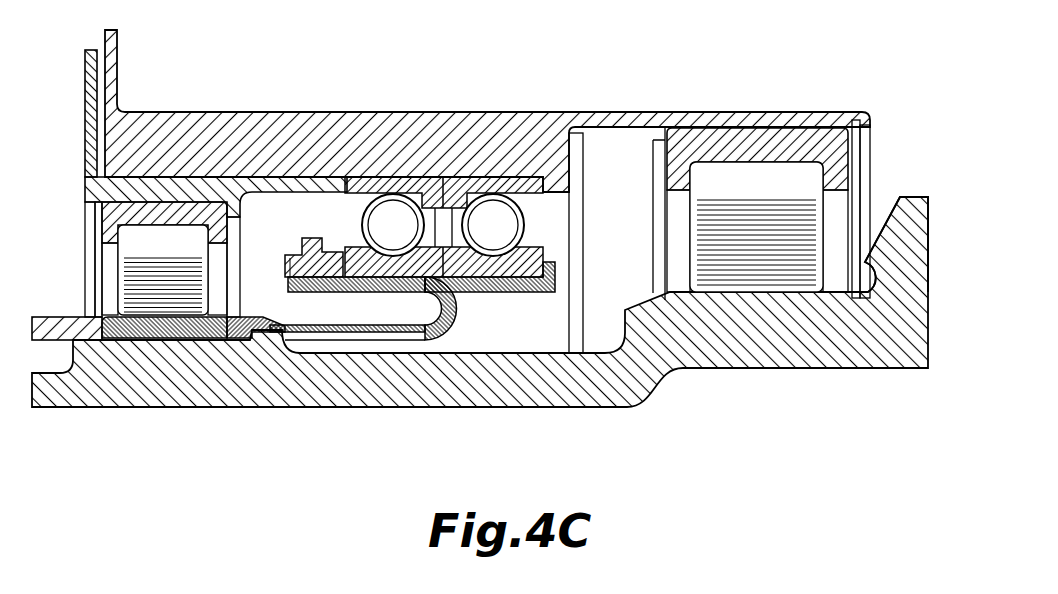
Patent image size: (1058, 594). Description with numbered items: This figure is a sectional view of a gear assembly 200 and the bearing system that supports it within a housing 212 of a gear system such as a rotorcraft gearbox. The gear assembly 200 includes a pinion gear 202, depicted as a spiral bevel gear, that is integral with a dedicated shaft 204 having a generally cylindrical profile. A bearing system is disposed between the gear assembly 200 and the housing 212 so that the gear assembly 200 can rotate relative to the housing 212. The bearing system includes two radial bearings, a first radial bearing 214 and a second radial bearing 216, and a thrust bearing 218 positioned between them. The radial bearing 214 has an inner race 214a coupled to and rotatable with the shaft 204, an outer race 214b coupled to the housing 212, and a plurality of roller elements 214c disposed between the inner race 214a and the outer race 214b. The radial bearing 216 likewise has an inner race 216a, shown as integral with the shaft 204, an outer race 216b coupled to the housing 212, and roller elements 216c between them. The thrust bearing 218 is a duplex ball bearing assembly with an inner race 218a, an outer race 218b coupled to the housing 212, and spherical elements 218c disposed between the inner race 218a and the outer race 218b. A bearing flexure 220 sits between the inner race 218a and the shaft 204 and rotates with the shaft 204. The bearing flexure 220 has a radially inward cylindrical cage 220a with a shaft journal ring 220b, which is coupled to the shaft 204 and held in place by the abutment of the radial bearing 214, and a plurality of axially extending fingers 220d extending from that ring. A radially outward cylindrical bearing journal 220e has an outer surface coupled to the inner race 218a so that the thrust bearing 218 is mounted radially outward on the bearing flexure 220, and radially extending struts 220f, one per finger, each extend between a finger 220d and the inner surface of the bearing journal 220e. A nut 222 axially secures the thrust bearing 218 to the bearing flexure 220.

The gear assembly 200 is at (721, 368).
The pinion gear 202 is at (918, 207).
The shaft 204 is at (178, 392).
The housing 212 is at (362, 127).
The radial bearing 214 is at (183, 196).
The inner race 214a is at (128, 330).
The outer race 214b is at (208, 212).
The roller elements 214c is at (162, 238).
The radial bearing 216 is at (760, 223).
The inner race 216a is at (787, 294).
The outer race 216b is at (805, 145).
The roller elements 216c is at (718, 178).
The thrust bearing 218 is at (463, 252).
The inner race 218a is at (520, 290).
The outer race 218b is at (477, 193).
The spherical elements 218c is at (502, 210).
The bearing flexure 220 is at (404, 377).
The cylindrical cage 220a is at (293, 330).
The shaft journal ring 220b is at (240, 331).
The fingers 220d is at (332, 333).
The cylindrical bearing journal 220e is at (478, 290).
The struts 220f is at (461, 313).
The nut 222 is at (310, 238).